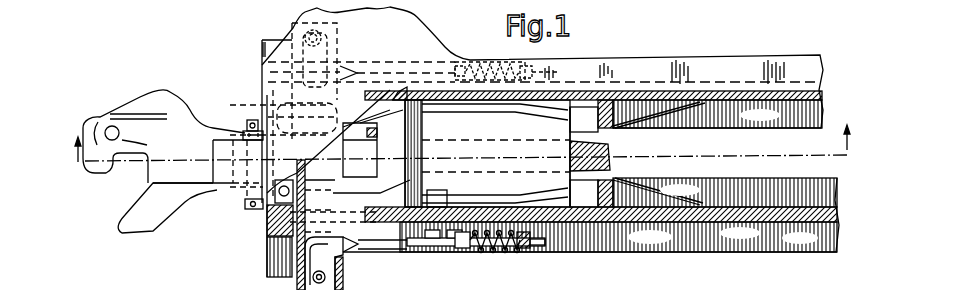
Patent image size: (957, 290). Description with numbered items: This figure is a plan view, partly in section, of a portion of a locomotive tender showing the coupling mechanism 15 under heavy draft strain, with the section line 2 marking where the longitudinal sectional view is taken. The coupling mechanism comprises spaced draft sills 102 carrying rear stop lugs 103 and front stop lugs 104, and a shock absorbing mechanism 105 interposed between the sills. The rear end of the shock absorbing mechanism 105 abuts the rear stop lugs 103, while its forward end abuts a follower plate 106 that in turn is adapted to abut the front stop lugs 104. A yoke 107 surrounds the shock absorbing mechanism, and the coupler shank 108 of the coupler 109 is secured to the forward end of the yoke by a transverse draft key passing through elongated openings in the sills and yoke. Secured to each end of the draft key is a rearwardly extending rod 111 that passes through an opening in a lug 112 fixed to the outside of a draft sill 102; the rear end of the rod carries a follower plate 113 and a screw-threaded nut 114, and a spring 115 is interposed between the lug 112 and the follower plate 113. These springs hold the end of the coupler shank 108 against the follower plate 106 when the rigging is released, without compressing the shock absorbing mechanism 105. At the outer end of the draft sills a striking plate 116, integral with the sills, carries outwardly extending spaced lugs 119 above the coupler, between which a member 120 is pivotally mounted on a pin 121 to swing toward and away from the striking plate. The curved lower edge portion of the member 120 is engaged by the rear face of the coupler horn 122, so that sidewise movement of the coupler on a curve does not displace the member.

The section line 2— 2 is at (463, 159).
The coupling mechanism 15 is at (571, 110).
The draft sills 102 is at (705, 70).
The rear stop lugs 103 is at (608, 110).
The front stop lugs 104 is at (400, 93).
The shock absorbing mechanism 105 is at (501, 153).
The follower plate 106 is at (412, 131).
The yoke 107 is at (612, 152).
The coupler shank 108 is at (353, 170).
The coupler 109 is at (140, 105).
The rod 111 is at (406, 72).
The lug 112 is at (458, 62).
The follower plate 113 is at (510, 83).
The nut 114 is at (512, 78).
The spring 115 is at (490, 72).
The striking plate 116 is at (272, 235).
The spaced lugs 119 is at (245, 133).
The member 120 is at (218, 190).
The pin 121 is at (248, 121).
The coupler horn 122 is at (172, 170).